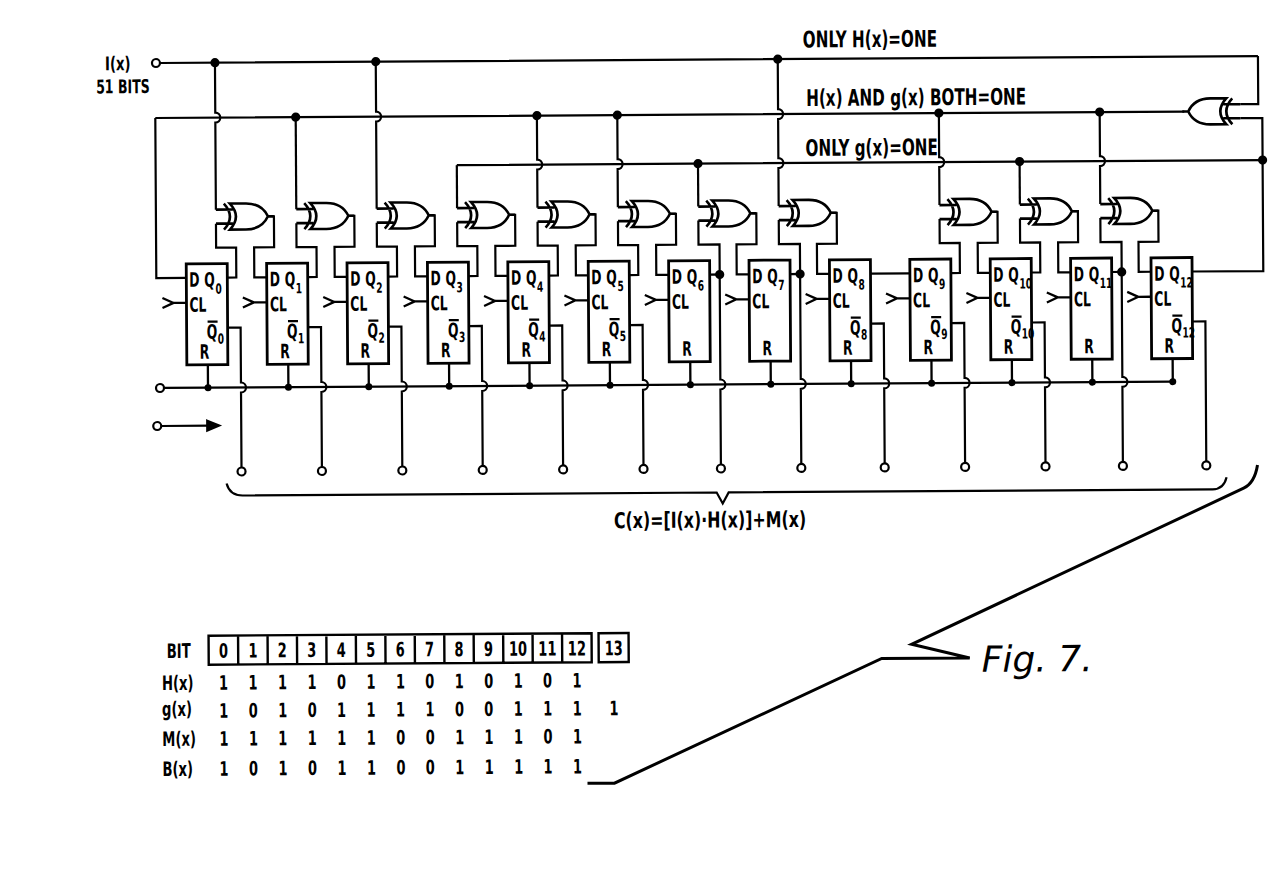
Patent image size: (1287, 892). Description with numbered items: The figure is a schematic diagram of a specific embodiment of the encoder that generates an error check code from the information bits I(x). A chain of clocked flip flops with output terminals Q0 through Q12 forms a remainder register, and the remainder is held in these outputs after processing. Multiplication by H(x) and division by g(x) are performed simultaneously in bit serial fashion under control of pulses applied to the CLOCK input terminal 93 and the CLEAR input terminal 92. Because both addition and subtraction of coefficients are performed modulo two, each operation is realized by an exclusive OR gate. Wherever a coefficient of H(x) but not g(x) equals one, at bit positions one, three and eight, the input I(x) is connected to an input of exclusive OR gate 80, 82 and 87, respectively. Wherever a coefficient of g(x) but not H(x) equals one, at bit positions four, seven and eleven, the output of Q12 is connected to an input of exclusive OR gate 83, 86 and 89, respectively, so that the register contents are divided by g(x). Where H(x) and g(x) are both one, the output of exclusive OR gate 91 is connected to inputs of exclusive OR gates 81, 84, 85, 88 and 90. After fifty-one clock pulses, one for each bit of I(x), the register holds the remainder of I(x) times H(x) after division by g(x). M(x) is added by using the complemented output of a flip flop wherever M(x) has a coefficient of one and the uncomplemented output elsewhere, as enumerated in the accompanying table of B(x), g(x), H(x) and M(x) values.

The exclusive OR gate 80 is at (245, 200).
The exclusive OR gate 81 is at (325, 199).
The exclusive OR gate 82 is at (405, 199).
The exclusive OR gate 83 is at (486, 198).
The exclusive OR gate 84 is at (566, 198).
The exclusive OR gate 85 is at (647, 197).
The exclusive OR gate 86 is at (727, 197).
The exclusive OR gate 87 is at (807, 196).
The exclusive OR gate 88 is at (968, 195).
The exclusive OR gate 89 is at (1049, 195).
The exclusive OR gate 90 is at (1129, 194).
The exclusive OR gate 91 is at (1207, 105).
The CLEAR input terminal 92 is at (175, 386).
The CLOCK input terminal 93 is at (178, 428).